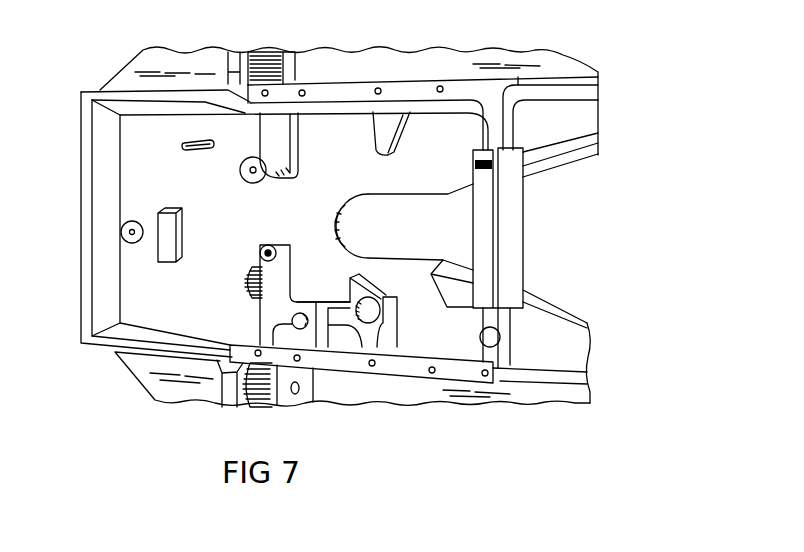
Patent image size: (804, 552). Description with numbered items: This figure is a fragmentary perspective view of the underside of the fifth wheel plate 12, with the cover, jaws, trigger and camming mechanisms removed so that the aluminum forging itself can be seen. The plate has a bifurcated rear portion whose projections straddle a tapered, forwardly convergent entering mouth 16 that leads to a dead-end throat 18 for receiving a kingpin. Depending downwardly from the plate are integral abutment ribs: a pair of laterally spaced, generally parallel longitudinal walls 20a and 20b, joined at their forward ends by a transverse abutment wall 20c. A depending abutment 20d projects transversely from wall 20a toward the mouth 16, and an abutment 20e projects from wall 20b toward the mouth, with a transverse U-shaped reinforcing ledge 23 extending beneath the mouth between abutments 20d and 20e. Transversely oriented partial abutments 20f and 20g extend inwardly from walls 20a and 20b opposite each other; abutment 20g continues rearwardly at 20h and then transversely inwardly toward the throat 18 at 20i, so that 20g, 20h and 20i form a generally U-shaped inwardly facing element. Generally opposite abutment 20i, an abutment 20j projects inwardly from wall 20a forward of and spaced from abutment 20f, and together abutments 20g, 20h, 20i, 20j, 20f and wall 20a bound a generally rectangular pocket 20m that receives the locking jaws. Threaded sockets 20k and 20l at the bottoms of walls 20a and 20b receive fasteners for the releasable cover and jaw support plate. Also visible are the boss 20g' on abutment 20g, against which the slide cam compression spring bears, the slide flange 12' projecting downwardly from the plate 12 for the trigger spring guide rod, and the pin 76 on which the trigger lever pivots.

The fifth wheel plate 12 is at (349, 85).
The slide flange 12' is at (188, 158).
The tapered entering mouth 16 is at (588, 249).
The dead-end throat 18 is at (373, 229).
The depending abutment wall 20a is at (413, 87).
The depending abutment wall 20b is at (398, 368).
The transverse abutment wall 20c is at (97, 167).
The depending abutment 20d is at (493, 132).
The abutment 20e is at (493, 320).
The partial abutment 20f is at (280, 163).
The partial abutment 20g is at (264, 295).
The boss 20g' is at (219, 282).
The rearwardly extending portion of abutment 20g 20h is at (305, 302).
The transversely inward portion of abutment 20g 20i is at (368, 280).
The abutment 20j is at (383, 143).
The threaded socket 20k is at (443, 86).
The threaded socket 20l is at (432, 375).
The rectangular pocket 20m is at (322, 137).
The U-shaped reinforcing ledge 23 is at (512, 212).
The pin 76 is at (260, 252).